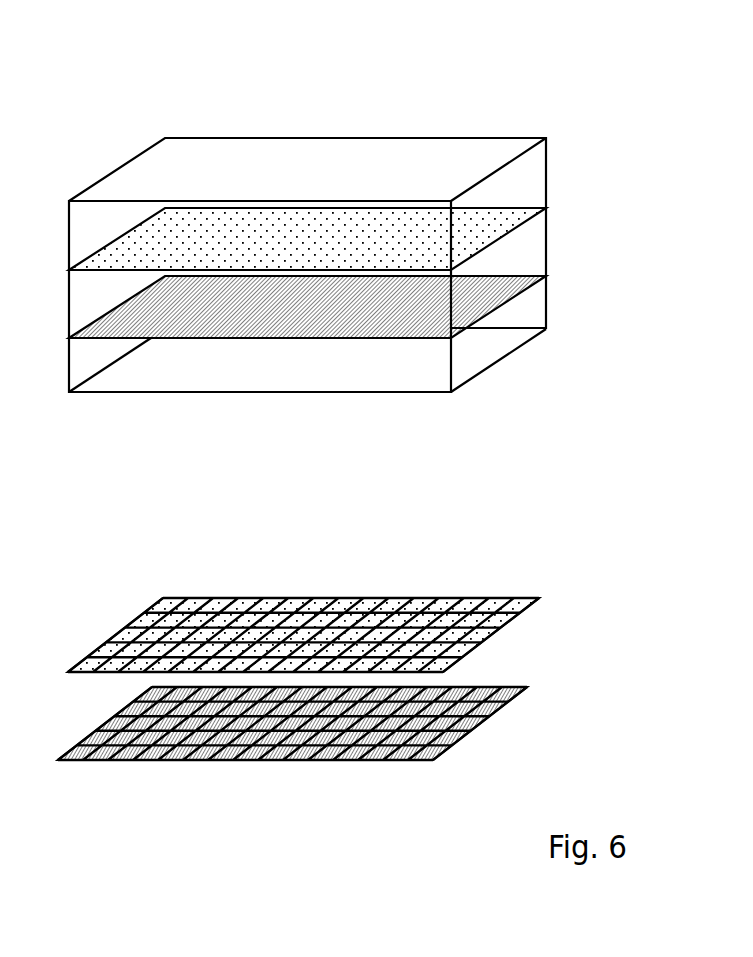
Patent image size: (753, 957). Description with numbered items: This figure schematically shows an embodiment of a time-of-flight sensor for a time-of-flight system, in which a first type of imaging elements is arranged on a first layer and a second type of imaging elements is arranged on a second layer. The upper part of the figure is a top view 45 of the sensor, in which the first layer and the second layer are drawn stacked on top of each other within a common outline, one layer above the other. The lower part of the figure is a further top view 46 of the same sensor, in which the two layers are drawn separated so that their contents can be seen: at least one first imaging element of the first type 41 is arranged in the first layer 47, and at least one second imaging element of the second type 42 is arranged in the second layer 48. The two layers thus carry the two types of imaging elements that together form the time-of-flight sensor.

The first imaging element of the first type 41 is at (508, 233).
The second imaging element of the second type 42 is at (497, 308).
The top view 45 is at (160, 98).
The top view 46 is at (147, 562).
The first layer 47 is at (495, 733).
The second layer 48 is at (514, 634).